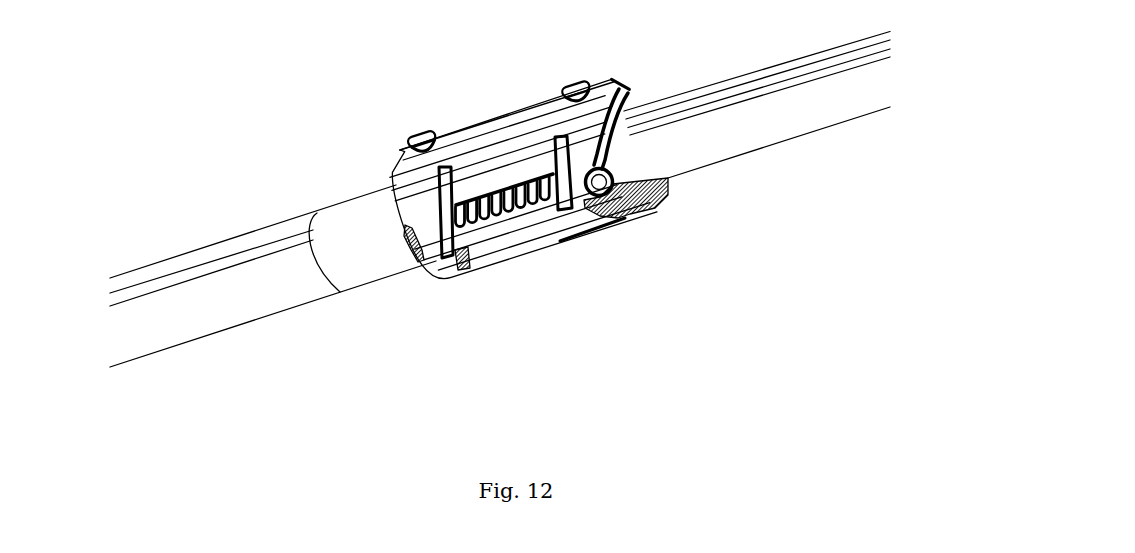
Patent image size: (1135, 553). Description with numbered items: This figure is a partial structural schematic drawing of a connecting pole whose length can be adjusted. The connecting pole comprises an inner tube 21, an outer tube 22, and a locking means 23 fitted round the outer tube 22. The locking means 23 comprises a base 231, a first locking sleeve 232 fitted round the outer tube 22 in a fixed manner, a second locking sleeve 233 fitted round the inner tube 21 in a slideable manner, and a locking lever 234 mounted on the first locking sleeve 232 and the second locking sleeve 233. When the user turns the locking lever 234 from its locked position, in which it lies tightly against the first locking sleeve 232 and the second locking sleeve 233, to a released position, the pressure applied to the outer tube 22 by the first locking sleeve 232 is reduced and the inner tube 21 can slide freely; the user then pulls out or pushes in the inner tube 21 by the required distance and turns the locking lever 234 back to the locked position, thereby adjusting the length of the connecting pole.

The inner tube 21 is at (710, 86).
The outer tube 22 is at (260, 250).
The locking means 23 is at (530, 240).
The base 231 is at (462, 137).
The first locking sleeve 232 is at (426, 188).
The second locking sleeve 233 is at (629, 264).
The locking lever 234 is at (547, 212).